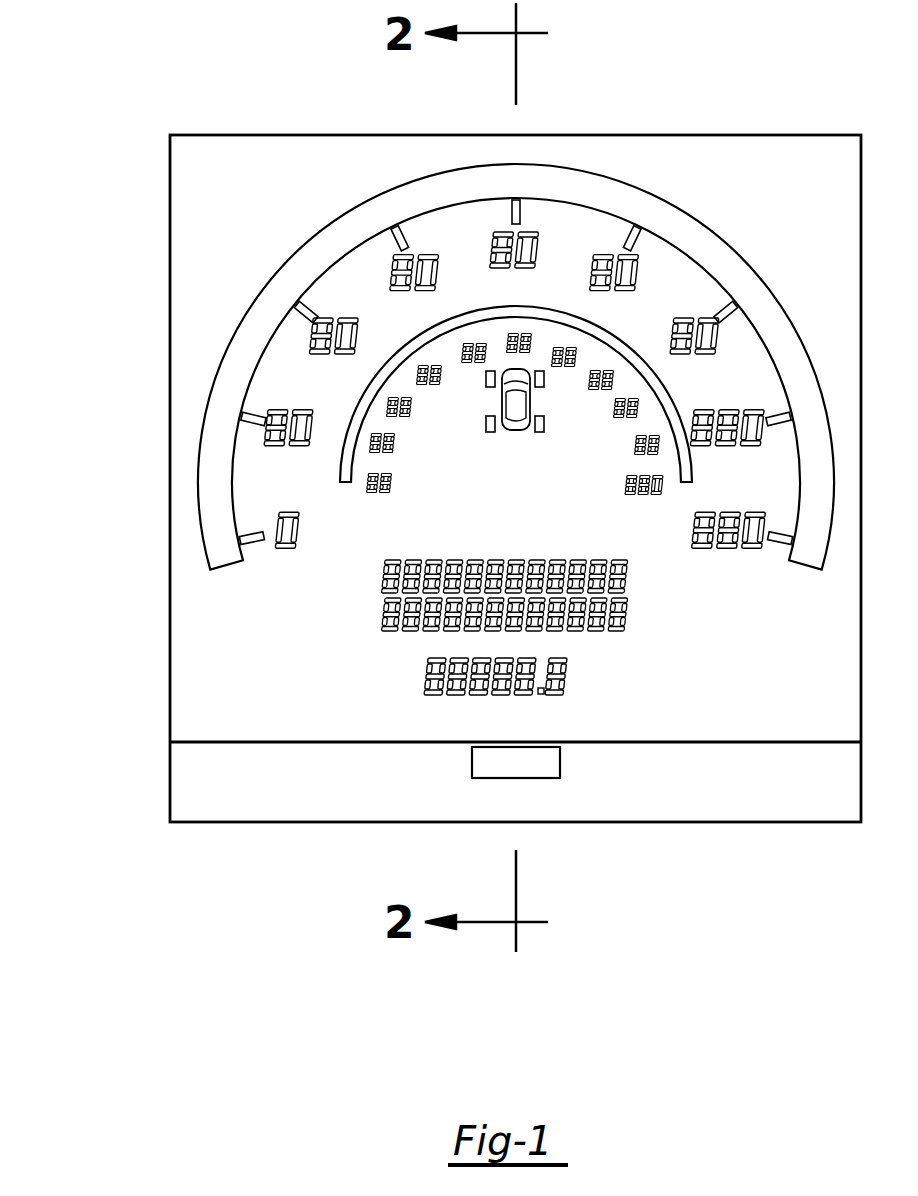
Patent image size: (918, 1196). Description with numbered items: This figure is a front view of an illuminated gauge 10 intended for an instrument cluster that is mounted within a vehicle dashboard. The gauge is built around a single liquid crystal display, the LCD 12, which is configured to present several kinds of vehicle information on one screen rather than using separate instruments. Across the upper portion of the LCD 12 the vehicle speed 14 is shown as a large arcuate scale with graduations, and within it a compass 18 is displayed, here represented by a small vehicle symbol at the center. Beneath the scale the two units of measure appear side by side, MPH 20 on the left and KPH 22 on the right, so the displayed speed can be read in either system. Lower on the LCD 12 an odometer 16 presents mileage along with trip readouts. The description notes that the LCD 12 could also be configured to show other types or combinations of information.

The illuminated gauge 10 is at (136, 66).
The liquid crystal display 12 is at (190, 653).
The vehicle speed 14 is at (333, 312).
The odometer 16 is at (570, 675).
The compass 18 is at (517, 427).
The MPH 20 is at (410, 517).
The KPH 22 is at (615, 517).